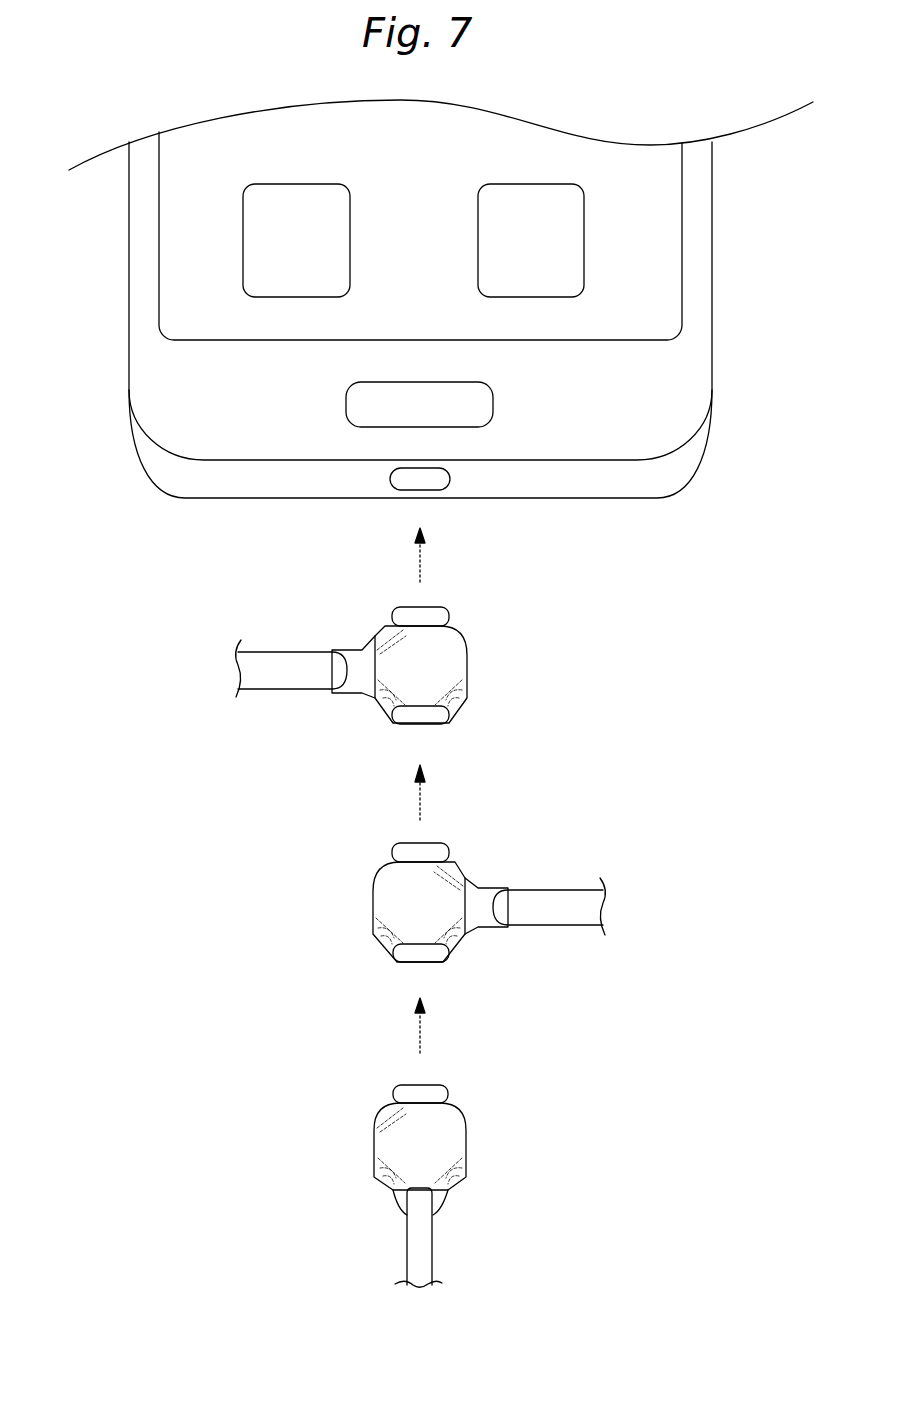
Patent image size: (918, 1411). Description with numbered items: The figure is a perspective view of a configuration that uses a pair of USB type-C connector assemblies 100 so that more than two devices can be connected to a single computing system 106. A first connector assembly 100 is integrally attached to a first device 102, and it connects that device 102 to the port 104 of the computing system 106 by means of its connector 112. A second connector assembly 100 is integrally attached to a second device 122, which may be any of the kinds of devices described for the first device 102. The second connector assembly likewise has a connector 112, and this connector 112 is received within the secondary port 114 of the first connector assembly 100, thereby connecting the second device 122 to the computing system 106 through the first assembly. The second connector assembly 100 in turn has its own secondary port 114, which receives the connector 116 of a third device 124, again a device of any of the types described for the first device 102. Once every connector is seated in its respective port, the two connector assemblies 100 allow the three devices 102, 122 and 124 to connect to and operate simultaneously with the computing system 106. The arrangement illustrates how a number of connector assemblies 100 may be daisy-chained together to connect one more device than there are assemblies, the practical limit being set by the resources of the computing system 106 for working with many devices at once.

The connector assembly 100 is at (457, 670).
The device 102 is at (287, 652).
The port 104 is at (428, 482).
The computing system 106 is at (690, 443).
The connector 112 is at (438, 607).
The secondary port 114 is at (430, 715).
The connector 116 is at (435, 1083).
The second device 122 is at (557, 888).
The third device 124 is at (425, 1253).